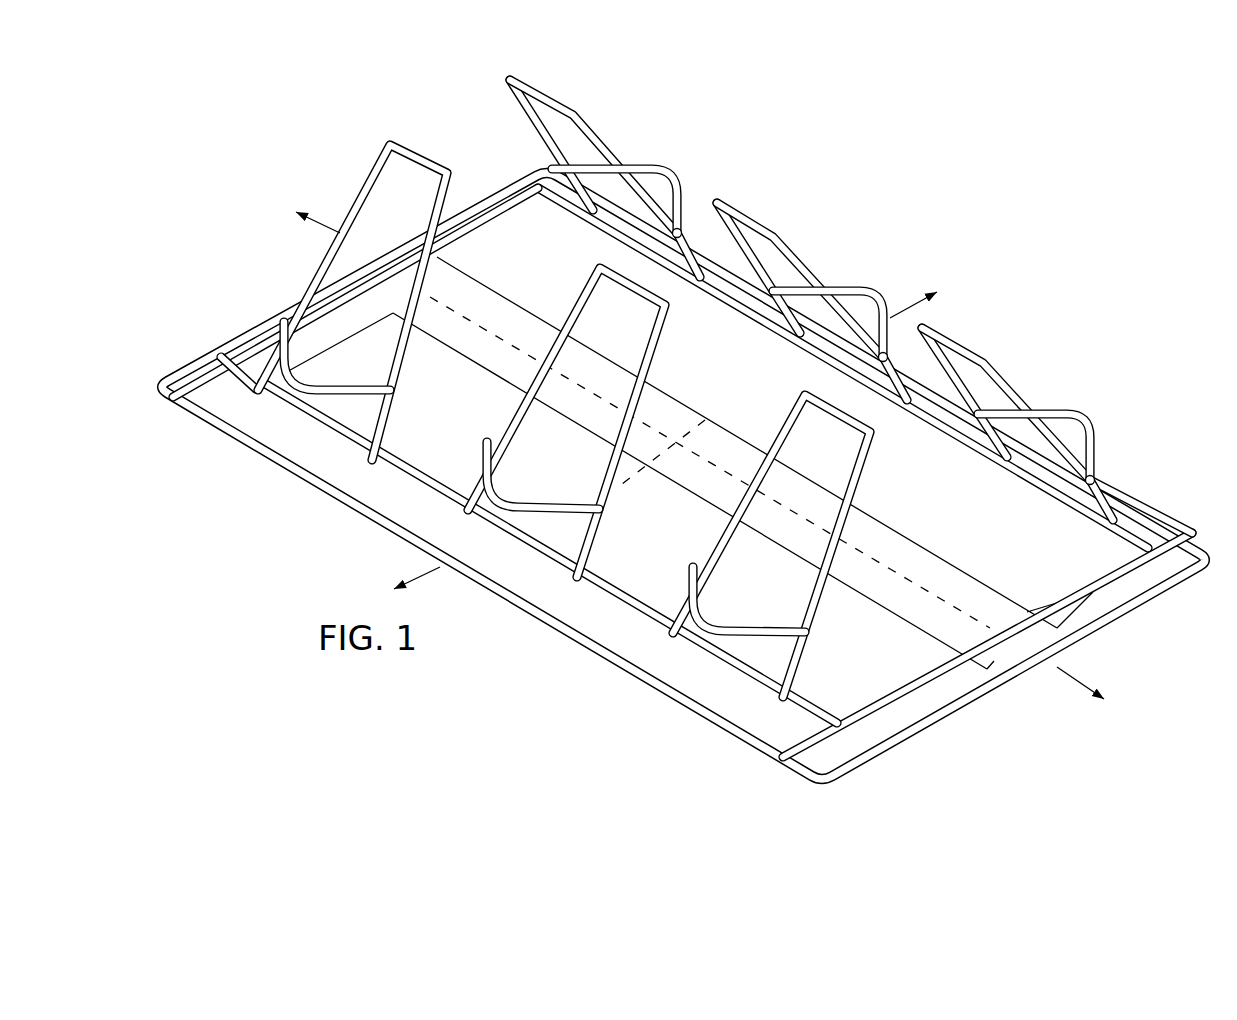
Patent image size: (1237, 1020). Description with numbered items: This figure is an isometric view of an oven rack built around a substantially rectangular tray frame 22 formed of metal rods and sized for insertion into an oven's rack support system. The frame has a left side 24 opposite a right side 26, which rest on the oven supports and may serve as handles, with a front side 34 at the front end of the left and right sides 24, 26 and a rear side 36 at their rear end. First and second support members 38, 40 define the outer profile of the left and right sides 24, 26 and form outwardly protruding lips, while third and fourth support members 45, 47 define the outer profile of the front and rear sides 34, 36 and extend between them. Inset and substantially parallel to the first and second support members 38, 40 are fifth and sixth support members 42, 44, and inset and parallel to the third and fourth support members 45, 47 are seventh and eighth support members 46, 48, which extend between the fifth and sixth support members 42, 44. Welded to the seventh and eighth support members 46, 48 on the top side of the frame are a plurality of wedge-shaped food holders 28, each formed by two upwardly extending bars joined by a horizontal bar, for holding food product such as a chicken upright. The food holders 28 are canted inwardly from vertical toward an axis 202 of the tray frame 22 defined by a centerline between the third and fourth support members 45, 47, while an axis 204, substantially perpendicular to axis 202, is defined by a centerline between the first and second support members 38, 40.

The tray frame 22 is at (270, 155).
The left side 24 is at (223, 276).
The right side 26 is at (970, 741).
The food holders 28 is at (372, 170).
The front side 34 is at (570, 684).
The rear side 36 is at (1044, 349).
The first support member 38 is at (207, 350).
The second support member 40 is at (1147, 618).
The fifth support member 42 is at (500, 225).
The sixth support member 44 is at (851, 724).
The third support member 45 is at (325, 490).
The seventh support member 46 is at (727, 663).
The fourth support member 47 is at (1140, 508).
The eighth support member 48 is at (712, 283).
The axis 202 is at (1063, 670).
The axis 204 is at (900, 312).